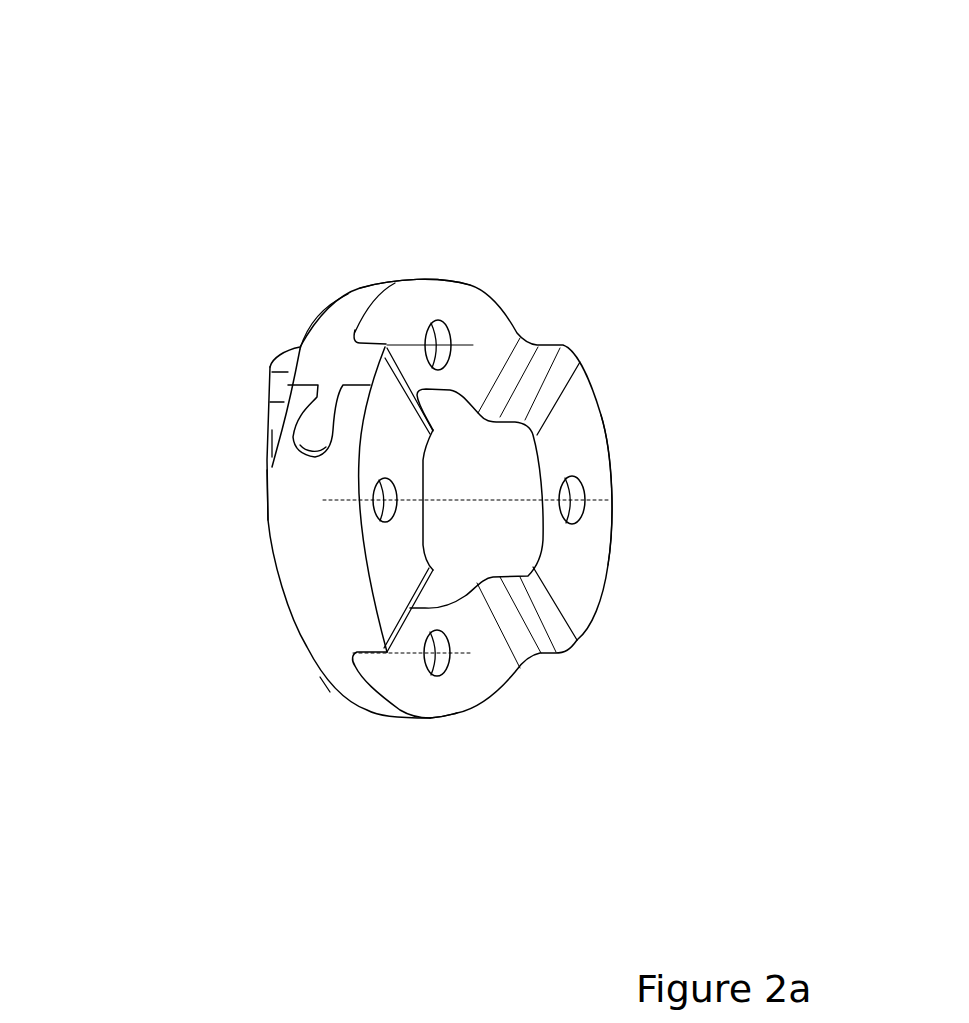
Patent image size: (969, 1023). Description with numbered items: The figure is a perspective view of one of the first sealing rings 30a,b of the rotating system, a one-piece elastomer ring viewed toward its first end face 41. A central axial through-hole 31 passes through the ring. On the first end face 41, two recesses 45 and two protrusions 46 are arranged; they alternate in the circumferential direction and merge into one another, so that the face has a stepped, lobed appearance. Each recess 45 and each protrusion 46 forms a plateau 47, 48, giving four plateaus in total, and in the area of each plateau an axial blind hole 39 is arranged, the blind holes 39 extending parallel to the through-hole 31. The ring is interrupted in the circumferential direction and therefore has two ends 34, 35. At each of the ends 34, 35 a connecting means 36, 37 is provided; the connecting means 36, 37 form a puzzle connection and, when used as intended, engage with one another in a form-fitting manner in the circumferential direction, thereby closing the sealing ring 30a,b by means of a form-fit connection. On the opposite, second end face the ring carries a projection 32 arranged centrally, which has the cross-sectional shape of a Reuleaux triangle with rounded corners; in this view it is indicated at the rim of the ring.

The first sealing rings 30a,b is at (400, 255).
The axial through-hole 31 is at (468, 445).
The projection 32 is at (280, 363).
The end 34 is at (327, 374).
The end 35 is at (278, 452).
The connecting means 36 is at (295, 428).
The connecting means 37 is at (318, 455).
The axial blind hole 39 is at (447, 335).
The first end face 41 is at (573, 407).
The recess 45 is at (440, 298).
The protrusion 46 is at (560, 453).
The plateau 47 is at (583, 463).
The plateau 48 is at (407, 323).